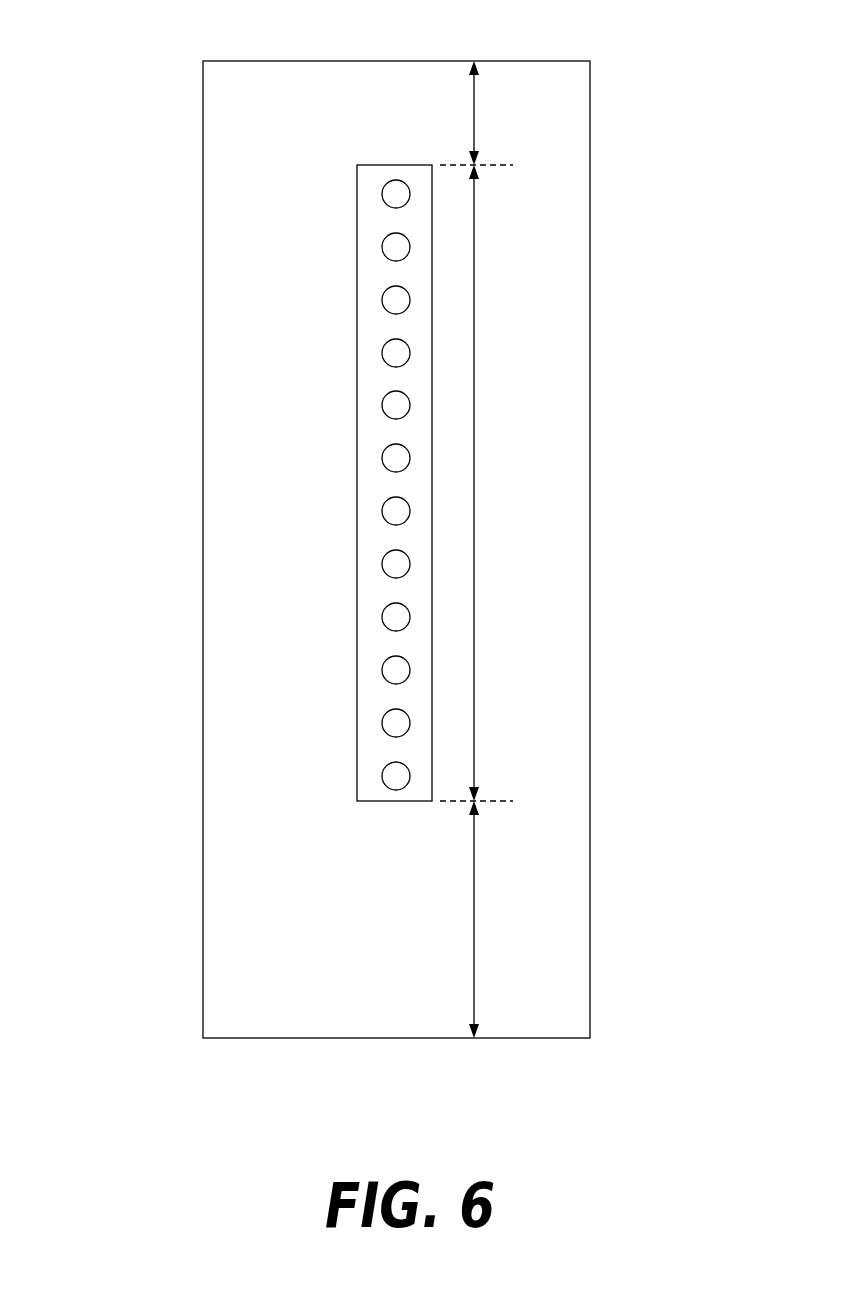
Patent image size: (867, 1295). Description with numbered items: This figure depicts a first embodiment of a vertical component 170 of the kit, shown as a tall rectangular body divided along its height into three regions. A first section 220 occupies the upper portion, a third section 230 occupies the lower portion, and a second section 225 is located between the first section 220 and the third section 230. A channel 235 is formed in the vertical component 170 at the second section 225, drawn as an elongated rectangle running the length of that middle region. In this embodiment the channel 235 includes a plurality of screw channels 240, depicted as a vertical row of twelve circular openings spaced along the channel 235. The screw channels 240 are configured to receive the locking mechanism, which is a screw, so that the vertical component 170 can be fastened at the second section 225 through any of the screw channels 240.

The vertical component 170 is at (158, 123).
The first section 220 is at (505, 104).
The second section 225 is at (505, 362).
The third section 230 is at (505, 916).
The channel 235 is at (347, 196).
The screw channels 240 is at (370, 249).